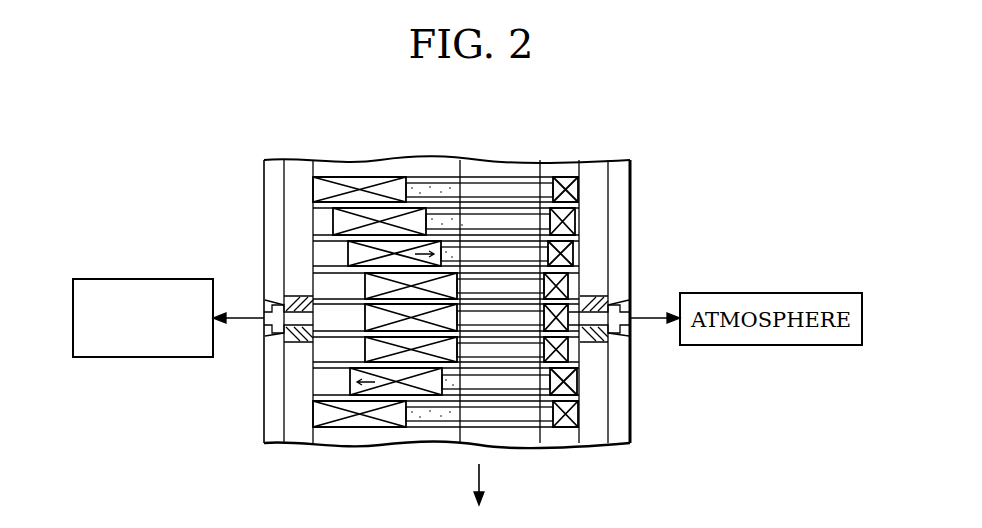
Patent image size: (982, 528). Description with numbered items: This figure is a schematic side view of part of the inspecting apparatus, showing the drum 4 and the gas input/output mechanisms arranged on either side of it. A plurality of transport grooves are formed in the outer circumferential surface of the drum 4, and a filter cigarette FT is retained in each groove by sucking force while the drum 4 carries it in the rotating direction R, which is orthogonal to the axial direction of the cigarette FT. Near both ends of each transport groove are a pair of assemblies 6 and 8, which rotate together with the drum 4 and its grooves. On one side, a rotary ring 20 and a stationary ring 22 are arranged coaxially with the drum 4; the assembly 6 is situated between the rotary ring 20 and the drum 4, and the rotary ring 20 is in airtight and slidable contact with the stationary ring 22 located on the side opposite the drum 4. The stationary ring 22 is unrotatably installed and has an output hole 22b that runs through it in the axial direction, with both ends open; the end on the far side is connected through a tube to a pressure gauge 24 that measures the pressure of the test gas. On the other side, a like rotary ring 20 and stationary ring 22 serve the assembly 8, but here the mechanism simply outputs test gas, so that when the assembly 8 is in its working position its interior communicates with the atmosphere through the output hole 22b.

The drum 4 is at (517, 170).
The assembly 6 is at (340, 220).
The assembly 8 is at (572, 190).
The rotary ring 20 is at (300, 168).
The stationary ring 22 is at (272, 168).
The output hole 22b is at (266, 320).
The pressure gauge 24 is at (119, 278).
The filter cigarette FT is at (473, 252).
The rotating direction R is at (487, 484).